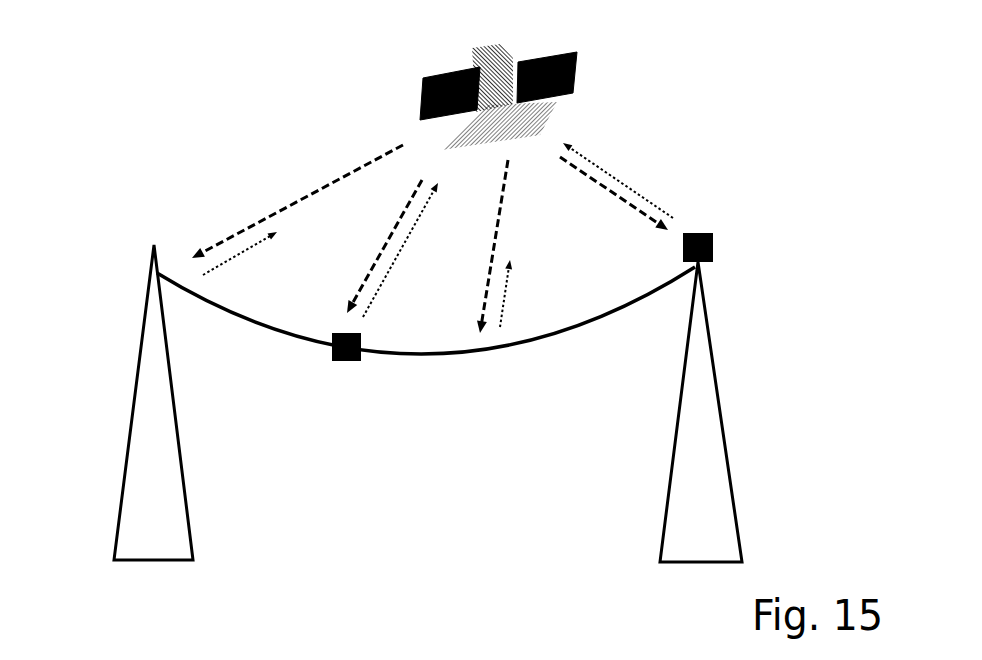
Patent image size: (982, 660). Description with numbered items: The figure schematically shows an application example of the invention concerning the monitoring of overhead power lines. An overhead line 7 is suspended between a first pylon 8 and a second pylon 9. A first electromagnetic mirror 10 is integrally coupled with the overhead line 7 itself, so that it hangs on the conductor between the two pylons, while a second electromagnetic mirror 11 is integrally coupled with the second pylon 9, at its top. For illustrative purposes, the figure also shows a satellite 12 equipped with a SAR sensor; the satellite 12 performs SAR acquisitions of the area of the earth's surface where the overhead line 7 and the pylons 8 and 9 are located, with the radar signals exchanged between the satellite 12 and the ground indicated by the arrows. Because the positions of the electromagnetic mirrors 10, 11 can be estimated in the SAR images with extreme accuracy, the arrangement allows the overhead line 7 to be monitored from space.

The overhead line 7 is at (565, 343).
The first pylon 8 is at (150, 417).
The second pylon 9 is at (697, 383).
The first electromagnetic mirror 10 is at (340, 363).
The second electromagnetic mirror 11 is at (713, 243).
The satellite 12 is at (483, 63).